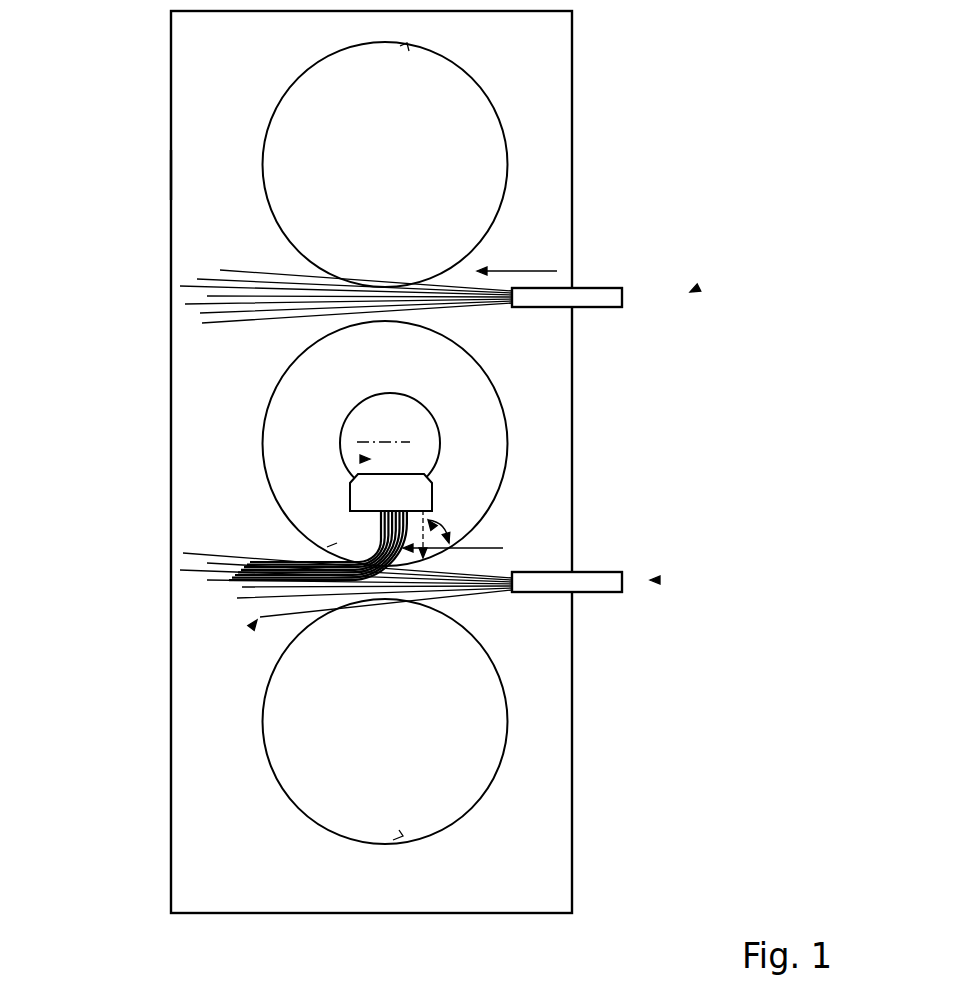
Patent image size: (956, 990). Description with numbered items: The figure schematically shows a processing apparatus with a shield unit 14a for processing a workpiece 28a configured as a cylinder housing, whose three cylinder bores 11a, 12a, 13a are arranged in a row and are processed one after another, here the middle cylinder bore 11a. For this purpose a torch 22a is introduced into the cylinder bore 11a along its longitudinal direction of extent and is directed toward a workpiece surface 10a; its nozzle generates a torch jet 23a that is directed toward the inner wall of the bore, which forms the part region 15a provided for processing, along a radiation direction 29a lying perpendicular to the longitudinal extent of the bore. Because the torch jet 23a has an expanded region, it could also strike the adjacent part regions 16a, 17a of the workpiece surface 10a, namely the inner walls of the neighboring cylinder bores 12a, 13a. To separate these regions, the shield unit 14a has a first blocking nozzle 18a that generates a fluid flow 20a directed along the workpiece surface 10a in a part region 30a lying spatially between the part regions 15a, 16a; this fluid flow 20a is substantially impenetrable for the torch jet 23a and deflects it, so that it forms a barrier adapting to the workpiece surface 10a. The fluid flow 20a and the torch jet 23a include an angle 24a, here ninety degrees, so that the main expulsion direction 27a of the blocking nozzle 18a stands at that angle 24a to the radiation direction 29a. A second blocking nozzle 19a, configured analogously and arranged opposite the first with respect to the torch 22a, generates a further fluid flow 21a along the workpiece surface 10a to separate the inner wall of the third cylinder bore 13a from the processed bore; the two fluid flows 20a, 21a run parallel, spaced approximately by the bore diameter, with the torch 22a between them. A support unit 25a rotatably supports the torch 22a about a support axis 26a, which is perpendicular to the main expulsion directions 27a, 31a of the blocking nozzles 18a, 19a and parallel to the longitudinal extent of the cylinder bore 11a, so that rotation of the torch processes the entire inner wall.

The workpiece surface 10a is at (545, 102).
The cylinder bore 11a is at (467, 403).
The cylinder bore 12a is at (485, 703).
The cylinder bore 13a is at (485, 175).
The shield unit 14a is at (692, 291).
The part region 15a is at (327, 547).
The part region 16a is at (393, 840).
The part region 17a is at (407, 43).
The blocking nozzle 18a is at (608, 583).
The second blocking nozzle 19a is at (577, 298).
The fluid flow 20a is at (483, 593).
The fluid flow 21a is at (473, 310).
The torch 22a is at (413, 490).
The torch jet 23a is at (378, 523).
The angle 24a is at (443, 525).
The support unit 25a is at (362, 459).
The support axis 26a is at (383, 442).
The main expulsion direction 27a is at (482, 548).
The workpiece 28a is at (205, 170).
The radiation direction 29a is at (407, 510).
The part region 30a is at (257, 620).
The main expulsion direction 31a is at (515, 268).